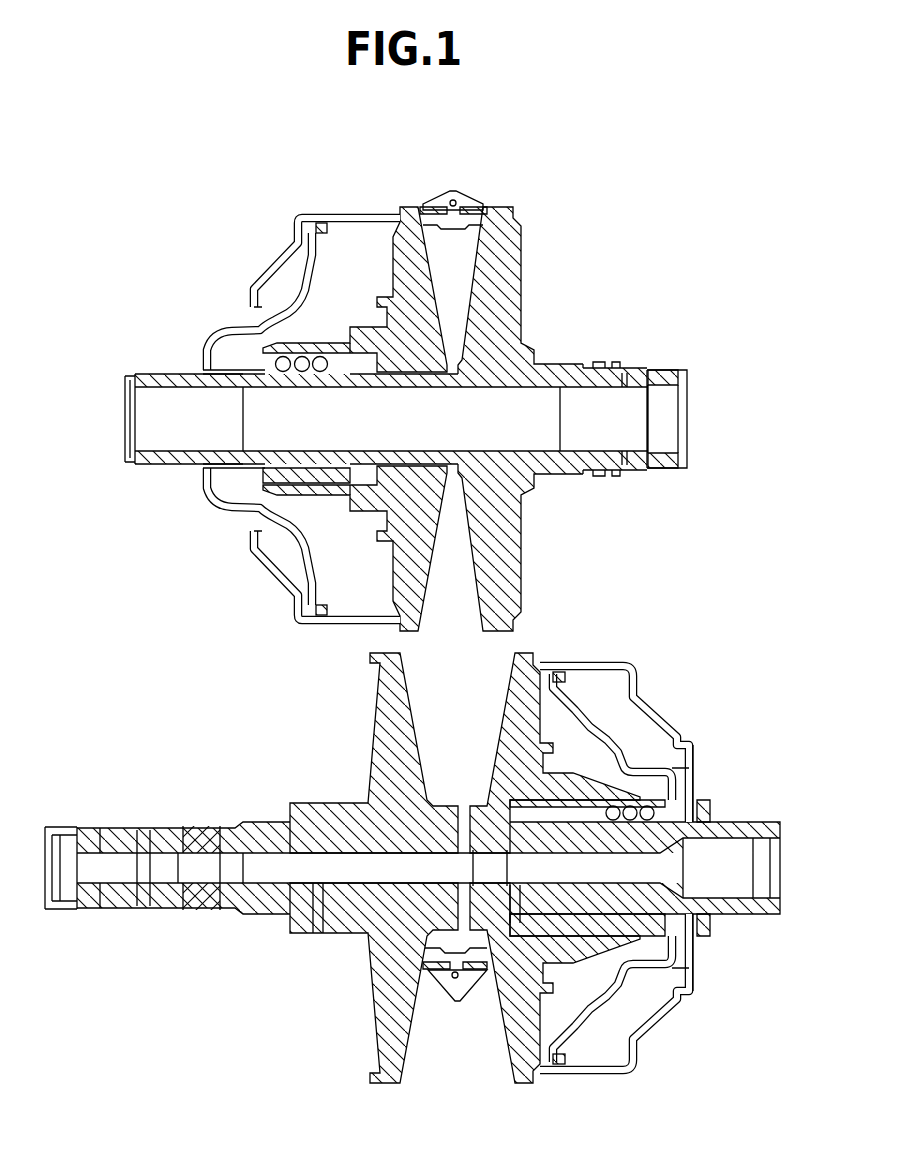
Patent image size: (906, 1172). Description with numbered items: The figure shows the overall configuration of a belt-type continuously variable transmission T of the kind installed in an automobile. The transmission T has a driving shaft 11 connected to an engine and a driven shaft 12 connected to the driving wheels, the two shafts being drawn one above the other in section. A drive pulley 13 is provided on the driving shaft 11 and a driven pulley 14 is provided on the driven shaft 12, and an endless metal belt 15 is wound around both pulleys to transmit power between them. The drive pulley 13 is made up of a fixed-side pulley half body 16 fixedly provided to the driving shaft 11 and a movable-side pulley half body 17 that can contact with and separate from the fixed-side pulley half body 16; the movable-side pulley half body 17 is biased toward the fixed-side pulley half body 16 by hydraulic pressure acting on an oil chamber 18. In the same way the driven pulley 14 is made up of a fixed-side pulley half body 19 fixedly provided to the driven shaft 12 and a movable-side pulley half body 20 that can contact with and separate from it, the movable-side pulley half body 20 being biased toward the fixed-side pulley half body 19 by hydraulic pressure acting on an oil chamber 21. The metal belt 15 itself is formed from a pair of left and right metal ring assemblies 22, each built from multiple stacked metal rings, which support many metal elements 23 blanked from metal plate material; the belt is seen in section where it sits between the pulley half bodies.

The belt-type continuously variable transmission T is at (216, 252).
The driving shaft 11 is at (597, 360).
The driven shaft 12 is at (330, 818).
The drive pulley 13 is at (604, 222).
The driven pulley 14 is at (503, 663).
The endless metal belt 15 is at (468, 194).
The fixed-side pulley half body 16 is at (512, 320).
The movable-side pulley half body 17 is at (420, 265).
The oil chamber 18 is at (352, 306).
The fixed-side pulley half body 19 is at (405, 722).
The movable-side pulley half body 20 is at (511, 722).
The oil chamber 21 is at (586, 769).
The metal ring assembly 22 is at (455, 993).
The metal element 23 is at (440, 200).